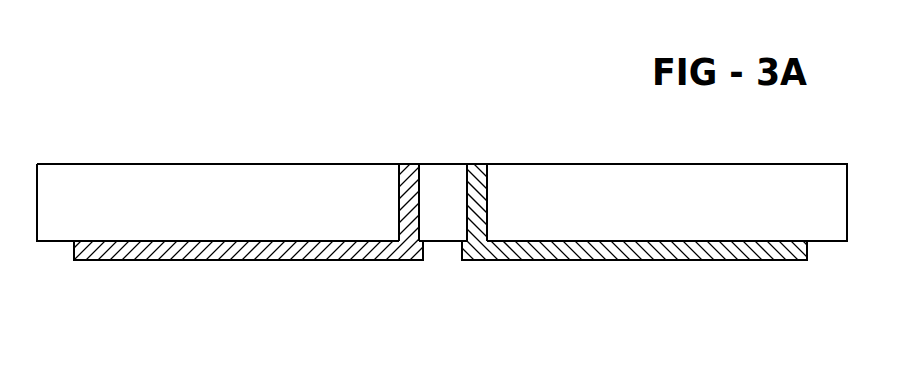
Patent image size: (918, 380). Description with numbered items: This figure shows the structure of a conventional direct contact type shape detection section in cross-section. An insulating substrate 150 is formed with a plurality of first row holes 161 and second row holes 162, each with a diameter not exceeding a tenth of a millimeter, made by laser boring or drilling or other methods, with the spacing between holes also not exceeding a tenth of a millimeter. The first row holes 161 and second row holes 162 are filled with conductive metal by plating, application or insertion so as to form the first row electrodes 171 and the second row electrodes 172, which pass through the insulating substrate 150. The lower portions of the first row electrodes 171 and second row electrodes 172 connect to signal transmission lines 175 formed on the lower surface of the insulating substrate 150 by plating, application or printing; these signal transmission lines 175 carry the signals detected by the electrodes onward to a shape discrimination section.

The insulating substrate 150 is at (48, 226).
The first row holes 161 is at (401, 164).
The second row holes 162 is at (484, 164).
The first row electrodes 171 is at (412, 164).
The second row electrodes 172 is at (474, 164).
The signal transmission lines 175 is at (207, 261).